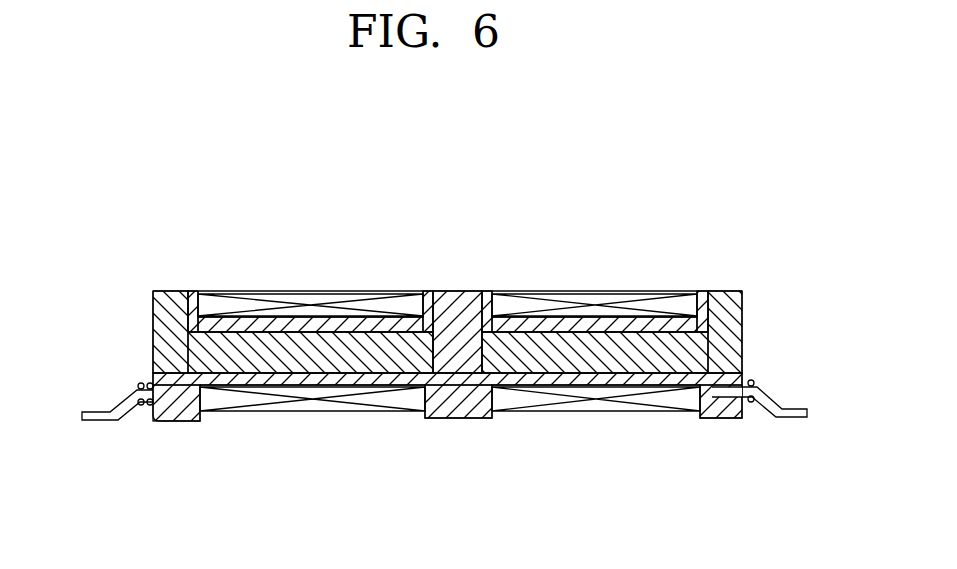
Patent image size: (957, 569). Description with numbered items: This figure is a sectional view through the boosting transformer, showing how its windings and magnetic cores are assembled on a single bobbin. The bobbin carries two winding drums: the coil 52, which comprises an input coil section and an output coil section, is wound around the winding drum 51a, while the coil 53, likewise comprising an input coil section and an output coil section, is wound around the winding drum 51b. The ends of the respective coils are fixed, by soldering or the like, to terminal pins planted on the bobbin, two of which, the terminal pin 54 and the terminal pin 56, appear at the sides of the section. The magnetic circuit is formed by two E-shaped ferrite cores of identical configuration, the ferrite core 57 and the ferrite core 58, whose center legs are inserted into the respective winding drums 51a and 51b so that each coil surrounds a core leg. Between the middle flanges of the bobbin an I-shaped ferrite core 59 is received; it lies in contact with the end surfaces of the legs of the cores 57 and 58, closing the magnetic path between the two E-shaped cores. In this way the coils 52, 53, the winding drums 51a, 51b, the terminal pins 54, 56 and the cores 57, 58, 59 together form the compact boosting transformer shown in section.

The winding drum 51a is at (278, 300).
The winding drum 51b is at (625, 300).
The coil 52 is at (233, 300).
The coil 53 is at (540, 300).
The terminal pin 54 is at (93, 413).
The terminal pin 56 is at (790, 403).
The ferrite core 57 is at (153, 340).
The ferrite core 58 is at (733, 322).
The I-shaped ferrite core 59 is at (452, 300).